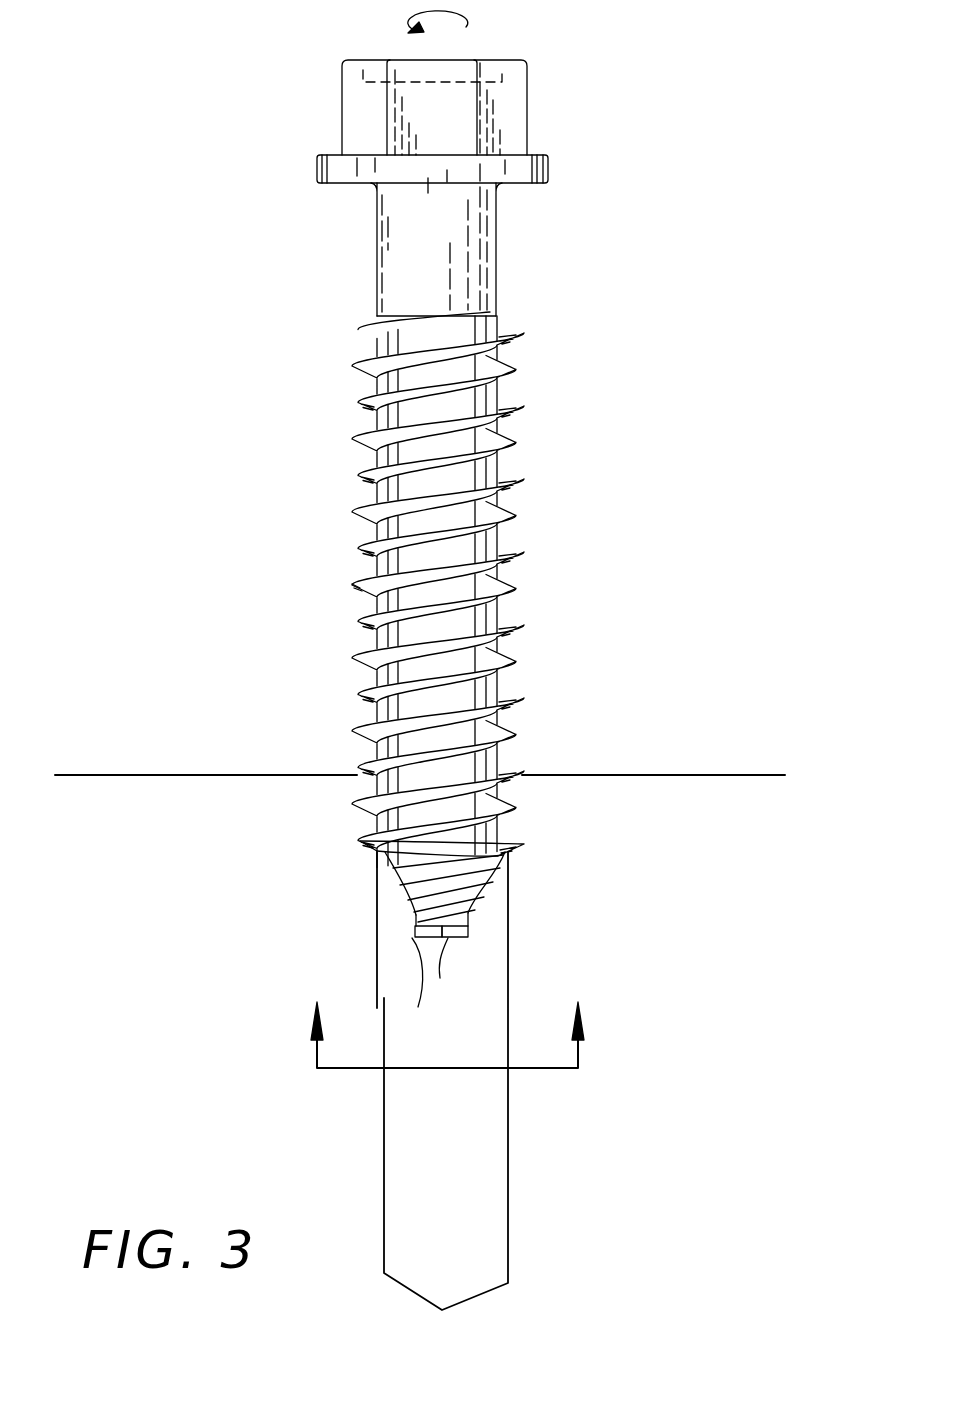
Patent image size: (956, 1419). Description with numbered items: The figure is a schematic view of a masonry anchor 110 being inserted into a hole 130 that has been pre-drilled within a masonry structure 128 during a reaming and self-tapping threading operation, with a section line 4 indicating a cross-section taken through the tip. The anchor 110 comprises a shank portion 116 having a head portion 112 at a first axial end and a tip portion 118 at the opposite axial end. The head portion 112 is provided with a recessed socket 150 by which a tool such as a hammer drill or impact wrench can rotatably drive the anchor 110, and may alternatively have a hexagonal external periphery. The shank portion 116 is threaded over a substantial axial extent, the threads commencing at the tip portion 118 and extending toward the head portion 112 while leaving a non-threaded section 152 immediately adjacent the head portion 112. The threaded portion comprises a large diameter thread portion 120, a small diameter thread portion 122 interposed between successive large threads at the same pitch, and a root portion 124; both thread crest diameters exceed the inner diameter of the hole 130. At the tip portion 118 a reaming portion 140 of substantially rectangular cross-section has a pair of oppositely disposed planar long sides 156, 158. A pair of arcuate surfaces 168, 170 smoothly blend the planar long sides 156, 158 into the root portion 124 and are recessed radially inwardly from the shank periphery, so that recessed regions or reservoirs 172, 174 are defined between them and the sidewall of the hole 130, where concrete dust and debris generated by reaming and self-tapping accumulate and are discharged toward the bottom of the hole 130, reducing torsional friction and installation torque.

The masonry anchor 110 is at (560, 390).
The head portion 112 is at (342, 110).
The shank portion 116 is at (496, 255).
The tip portion 118 is at (453, 973).
The large diameter thread portion 120 is at (520, 551).
The small diameter thread portion 122 is at (366, 618).
The root portion 124 is at (500, 502).
The masonry structure 128 is at (272, 1143).
The hole 130 is at (473, 1185).
The reaming portion 140 is at (438, 933).
The recessed socket 150 is at (455, 68).
The non-threaded section 152 is at (403, 222).
The planar long side 156 is at (413, 928).
The planar long side 158 is at (465, 930).
The arcuate surface 168 is at (398, 883).
The arcuate surface 170 is at (478, 900).
The recessed region or reservoir 172 is at (388, 900).
The recessed region or reservoir 174 is at (495, 908).
The section line 4- 4 is at (447, 1035).